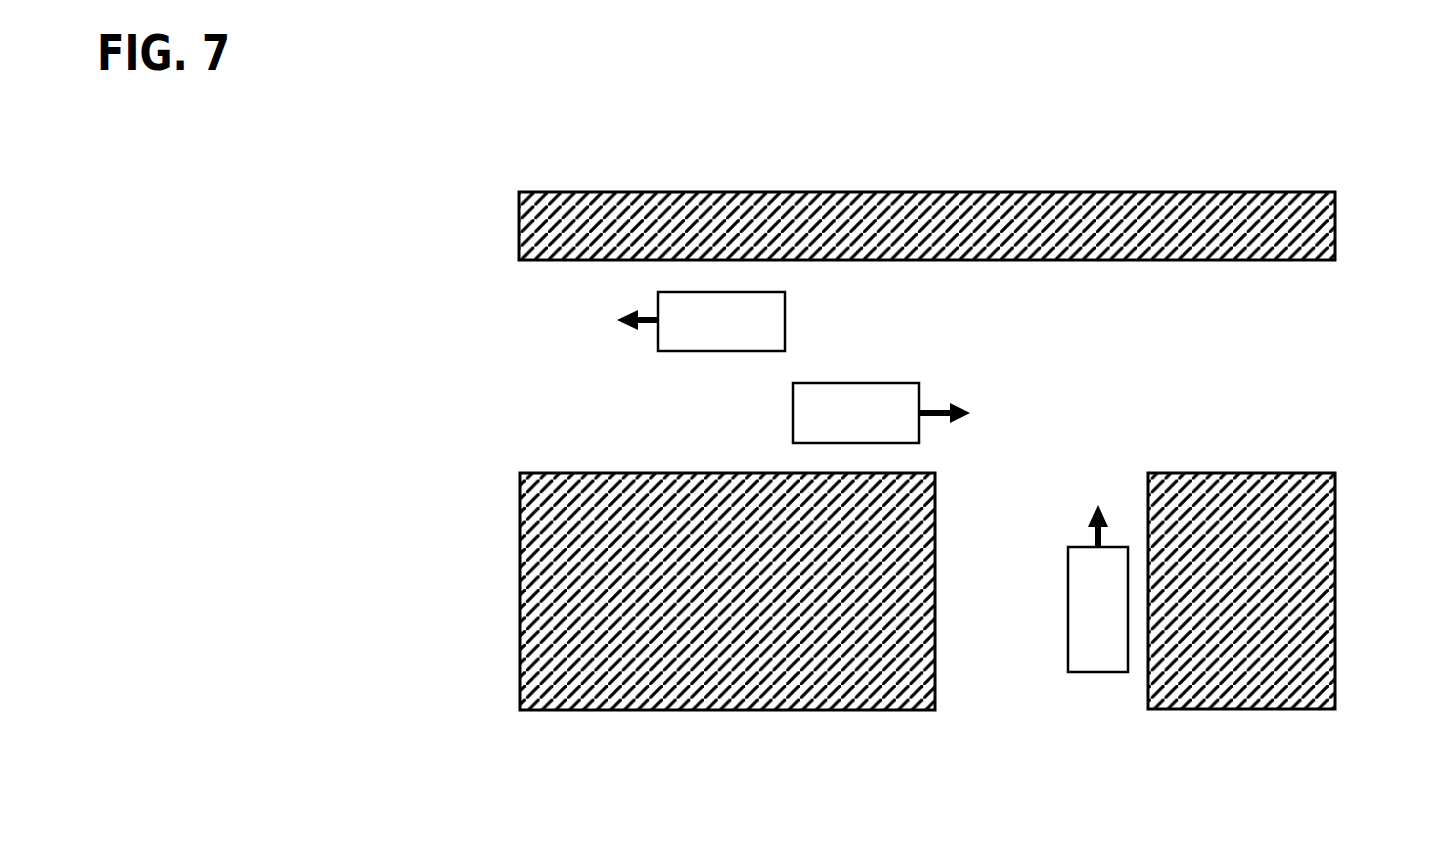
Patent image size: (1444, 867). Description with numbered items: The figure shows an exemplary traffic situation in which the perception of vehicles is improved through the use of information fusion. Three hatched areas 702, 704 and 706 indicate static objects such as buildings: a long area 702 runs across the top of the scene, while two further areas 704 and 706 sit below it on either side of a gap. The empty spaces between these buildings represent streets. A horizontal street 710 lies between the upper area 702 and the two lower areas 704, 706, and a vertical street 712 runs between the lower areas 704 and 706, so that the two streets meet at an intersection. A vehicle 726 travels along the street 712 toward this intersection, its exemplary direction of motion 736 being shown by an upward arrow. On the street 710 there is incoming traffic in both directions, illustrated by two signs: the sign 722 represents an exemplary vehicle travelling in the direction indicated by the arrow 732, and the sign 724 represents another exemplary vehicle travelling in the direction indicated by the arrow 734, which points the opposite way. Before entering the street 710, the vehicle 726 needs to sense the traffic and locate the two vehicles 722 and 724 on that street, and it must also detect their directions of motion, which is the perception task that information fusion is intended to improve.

The area 702 is at (925, 192).
The area 704 is at (520, 590).
The area 706 is at (1336, 592).
The street 710 is at (526, 360).
The street 712 is at (1039, 685).
The sign 722 is at (720, 352).
The sign 724 is at (856, 383).
The vehicle 726 is at (1067, 608).
The arrow 732 is at (640, 328).
The arrow 734 is at (952, 408).
The direction of motion 736 is at (1087, 527).